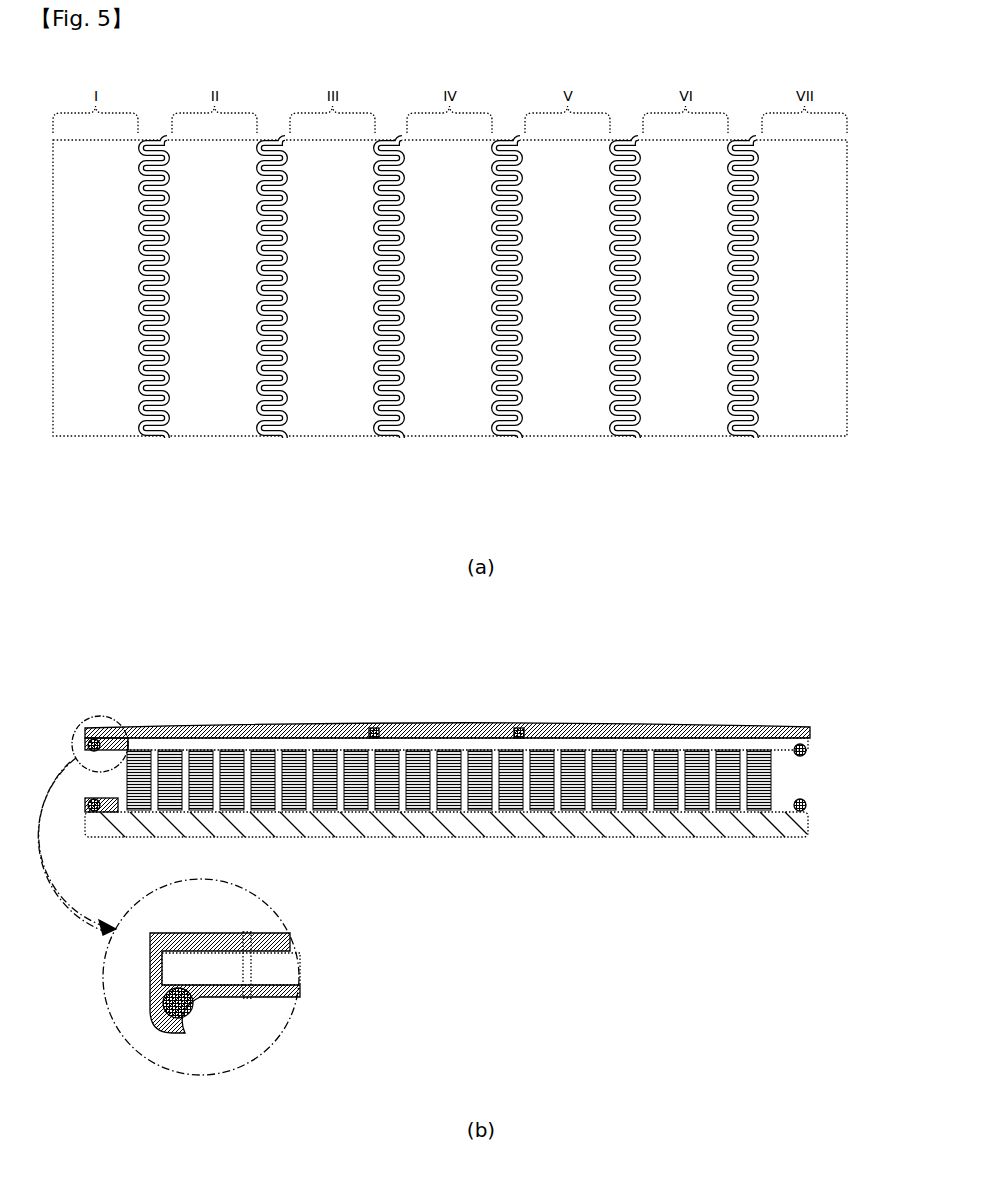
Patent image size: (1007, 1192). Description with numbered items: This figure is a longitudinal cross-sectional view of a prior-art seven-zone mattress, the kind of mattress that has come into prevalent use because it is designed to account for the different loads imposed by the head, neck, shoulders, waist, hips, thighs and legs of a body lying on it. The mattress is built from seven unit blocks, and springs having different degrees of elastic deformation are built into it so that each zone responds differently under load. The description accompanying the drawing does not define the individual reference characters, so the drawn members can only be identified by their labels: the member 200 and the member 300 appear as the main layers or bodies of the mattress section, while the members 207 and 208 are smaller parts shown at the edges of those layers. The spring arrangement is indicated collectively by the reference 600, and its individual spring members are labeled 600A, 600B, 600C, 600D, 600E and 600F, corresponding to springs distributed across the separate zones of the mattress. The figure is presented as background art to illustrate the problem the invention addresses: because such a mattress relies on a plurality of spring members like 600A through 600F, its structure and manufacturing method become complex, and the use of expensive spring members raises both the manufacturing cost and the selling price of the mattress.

The upper plate 200 is at (678, 437).
The sealing member 207 is at (806, 752).
The reinforcing member 208 is at (632, 735).
The lower plate 300 is at (800, 822).
The coil assembly 600 is at (542, 668).
The first coil 600A is at (150, 437).
The second coil 600B is at (268, 437).
The third coil 600C is at (385, 437).
The fourth coil 600D is at (503, 437).
The fifth coil 600E is at (621, 437).
The sixth coil 600F is at (739, 437).